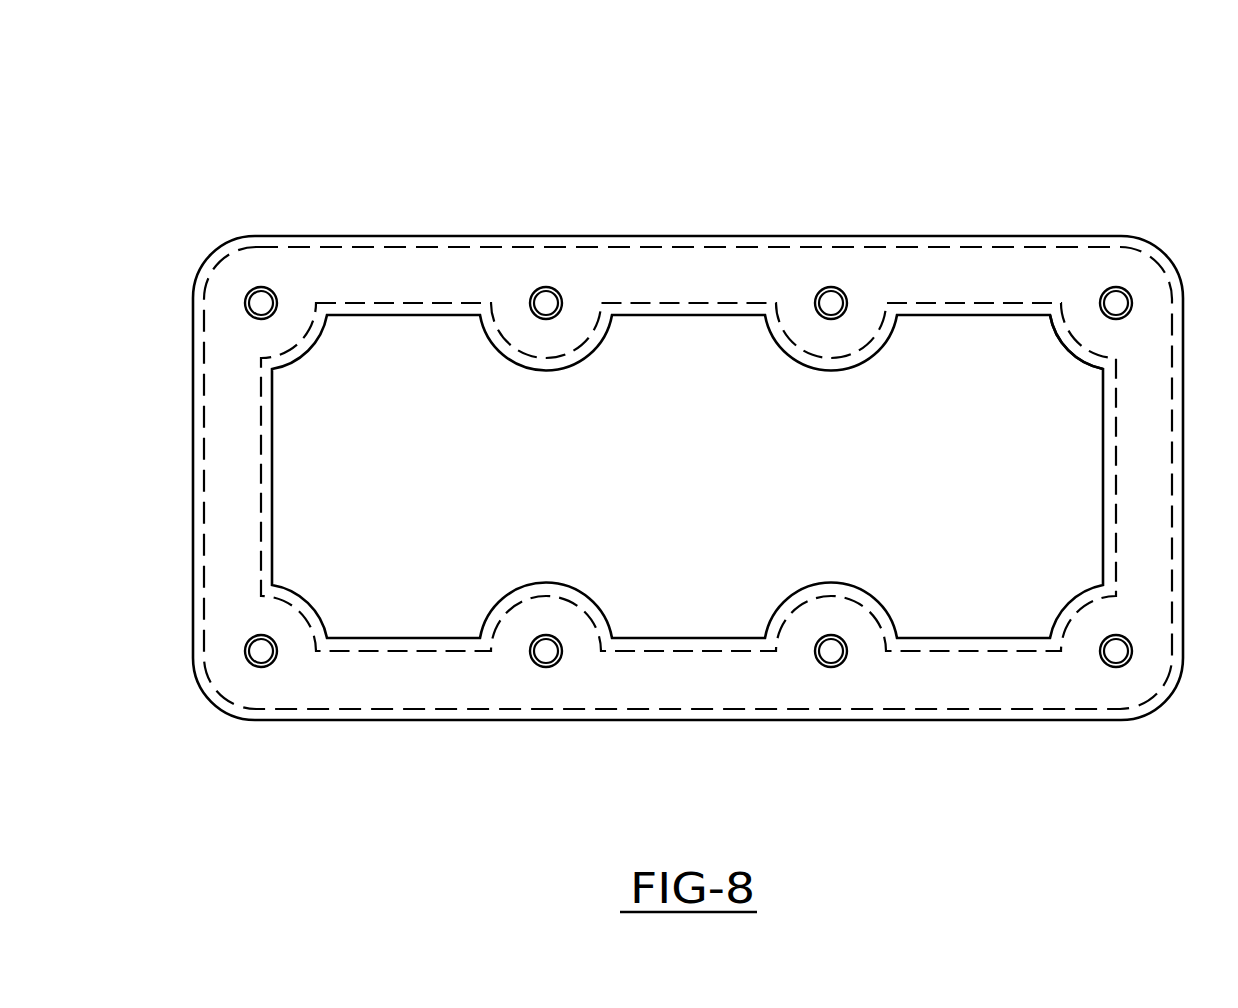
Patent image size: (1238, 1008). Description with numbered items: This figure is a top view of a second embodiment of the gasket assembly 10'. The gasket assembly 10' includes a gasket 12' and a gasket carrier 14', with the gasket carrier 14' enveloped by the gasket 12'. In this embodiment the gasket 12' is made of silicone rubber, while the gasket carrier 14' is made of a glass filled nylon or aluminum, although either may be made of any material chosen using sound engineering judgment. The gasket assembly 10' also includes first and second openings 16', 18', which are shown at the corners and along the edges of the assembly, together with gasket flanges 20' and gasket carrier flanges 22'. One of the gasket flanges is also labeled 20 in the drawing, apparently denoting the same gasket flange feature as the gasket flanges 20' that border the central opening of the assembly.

The gasket assembly 10' is at (687, 442).
The gasket 12' is at (688, 543).
The gasket carrier 14' is at (688, 434).
The first opening 16' is at (650, 482).
The second opening 18' is at (727, 495).
The gasket flange 20' is at (687, 476).
The central opening arcuate portion 20 is at (1060, 371).
The gasket carrier flange 22' is at (688, 477).